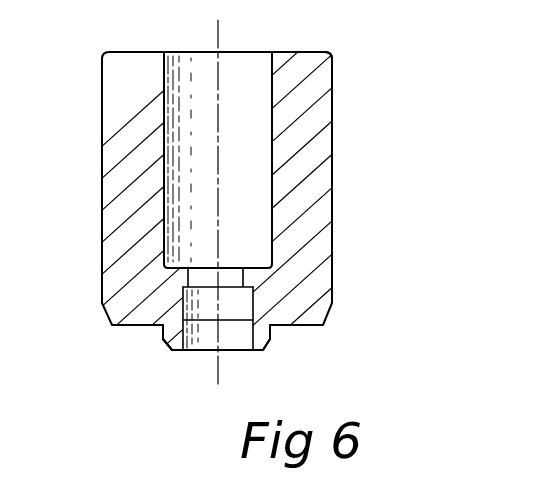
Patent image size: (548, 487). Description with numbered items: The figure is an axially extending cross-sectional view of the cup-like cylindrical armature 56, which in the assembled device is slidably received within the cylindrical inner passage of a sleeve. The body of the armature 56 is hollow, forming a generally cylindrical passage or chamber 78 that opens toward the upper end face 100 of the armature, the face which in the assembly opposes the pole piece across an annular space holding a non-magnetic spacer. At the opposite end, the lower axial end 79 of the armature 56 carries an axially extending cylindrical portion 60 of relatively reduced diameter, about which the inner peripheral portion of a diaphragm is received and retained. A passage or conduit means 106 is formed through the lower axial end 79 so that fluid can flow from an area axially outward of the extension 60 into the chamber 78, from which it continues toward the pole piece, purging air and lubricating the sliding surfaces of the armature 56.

The armature 56 is at (100, 186).
The end face of armature 100 is at (308, 52).
The passage or chamber means 78 is at (165, 183).
The lower axial end of armature 79 is at (262, 282).
The passage or conduit means 106 is at (192, 276).
The axially extending cylindrical portion 60 is at (273, 338).